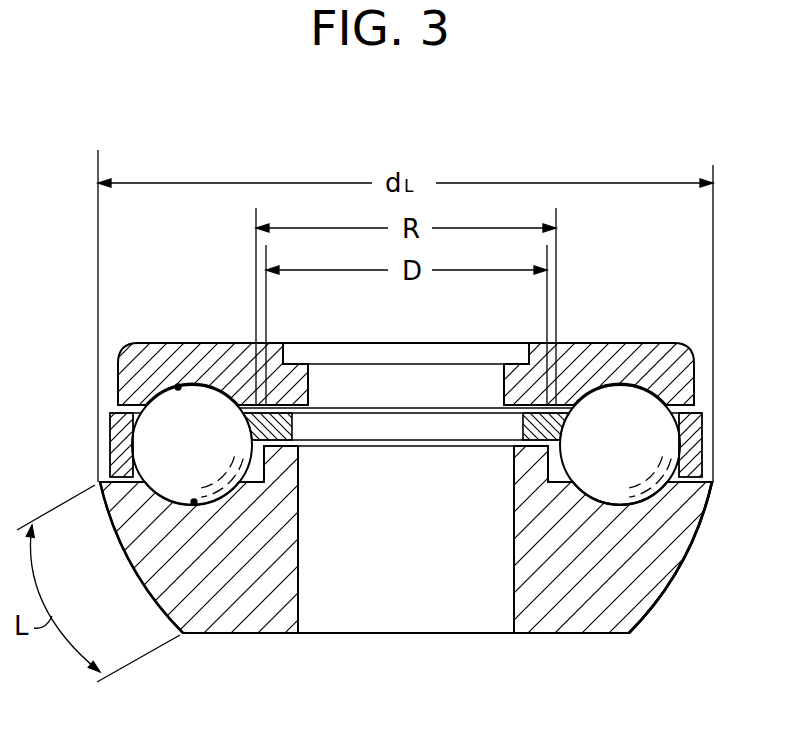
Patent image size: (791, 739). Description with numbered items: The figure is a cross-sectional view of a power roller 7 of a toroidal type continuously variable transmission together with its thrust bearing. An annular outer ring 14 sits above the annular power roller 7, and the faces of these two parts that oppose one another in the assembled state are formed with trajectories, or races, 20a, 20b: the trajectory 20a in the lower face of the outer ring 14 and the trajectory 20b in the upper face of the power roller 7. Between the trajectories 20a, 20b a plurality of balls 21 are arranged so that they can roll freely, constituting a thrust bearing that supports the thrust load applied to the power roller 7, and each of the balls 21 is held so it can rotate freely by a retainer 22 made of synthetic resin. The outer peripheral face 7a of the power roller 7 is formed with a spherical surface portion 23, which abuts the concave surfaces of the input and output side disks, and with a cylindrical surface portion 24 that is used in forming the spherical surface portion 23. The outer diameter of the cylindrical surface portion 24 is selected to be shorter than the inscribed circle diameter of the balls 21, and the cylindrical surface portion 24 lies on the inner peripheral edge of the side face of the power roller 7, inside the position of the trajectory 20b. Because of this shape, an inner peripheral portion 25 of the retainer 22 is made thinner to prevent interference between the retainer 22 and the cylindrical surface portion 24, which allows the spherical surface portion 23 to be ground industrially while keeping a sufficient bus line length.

The power roller 7 is at (568, 642).
The outer peripheral face 7a is at (647, 620).
The outer ring 14 is at (641, 347).
The trajectory 20a is at (178, 386).
The trajectory 20b is at (195, 504).
The balls 21 is at (217, 402).
The retainer 22 is at (686, 408).
The spherical surface portion 23 is at (680, 575).
The cylindrical surface portion 24 is at (567, 470).
The inner peripheral portion 25 is at (528, 425).